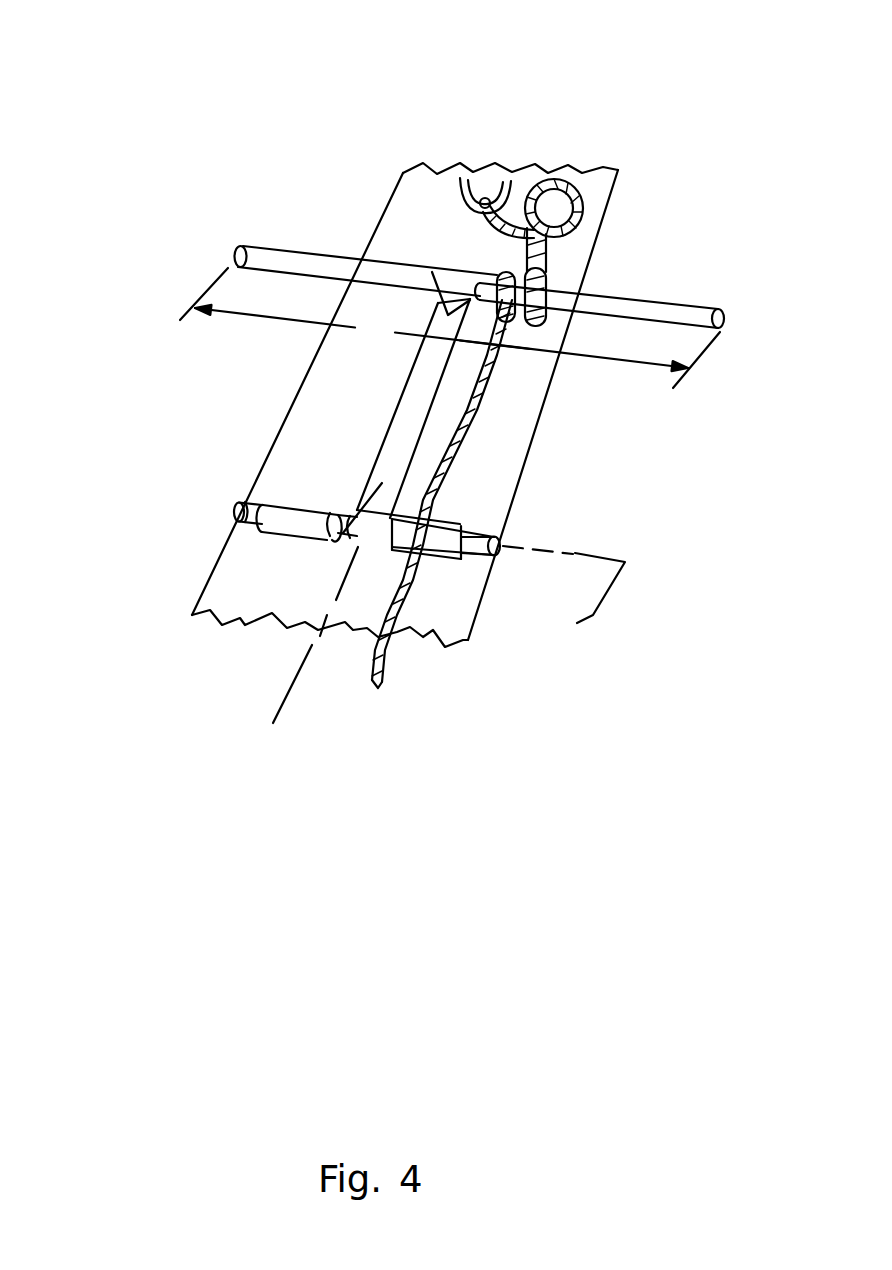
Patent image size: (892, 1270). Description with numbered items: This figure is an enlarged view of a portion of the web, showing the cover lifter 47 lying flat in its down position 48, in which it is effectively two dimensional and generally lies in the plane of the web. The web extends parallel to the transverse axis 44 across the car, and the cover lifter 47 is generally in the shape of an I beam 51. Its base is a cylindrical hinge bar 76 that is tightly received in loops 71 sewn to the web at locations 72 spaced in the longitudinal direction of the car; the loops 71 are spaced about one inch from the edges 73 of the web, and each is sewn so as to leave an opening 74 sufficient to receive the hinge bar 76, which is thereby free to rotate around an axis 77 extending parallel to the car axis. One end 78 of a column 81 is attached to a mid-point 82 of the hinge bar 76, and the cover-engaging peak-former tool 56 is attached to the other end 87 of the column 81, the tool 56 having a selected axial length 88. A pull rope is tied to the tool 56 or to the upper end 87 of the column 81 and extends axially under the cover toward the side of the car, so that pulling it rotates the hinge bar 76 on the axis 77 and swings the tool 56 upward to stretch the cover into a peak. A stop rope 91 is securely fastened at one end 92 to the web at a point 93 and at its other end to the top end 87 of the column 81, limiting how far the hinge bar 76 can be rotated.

The transverse axis 44 is at (382, 463).
The cover lifter 47 is at (293, 529).
The down position 48 is at (604, 258).
The I beam 51 is at (297, 479).
The peak-former tool 56 is at (366, 232).
The loops 71 is at (304, 545).
The locations 72 is at (584, 529).
The edges 73 is at (450, 328).
The opening 74 is at (163, 496).
The hinge bar 76 is at (252, 484).
The axis 77 is at (590, 603).
The one end of column 78 is at (247, 628).
The column 81 is at (396, 297).
The mid-point 82 is at (328, 408).
The other end of column 87 is at (399, 386).
The axial length 88 is at (460, 340).
The stop rope 91 is at (600, 206).
The one end of stop rope 92 is at (506, 120).
The point 93 is at (445, 168).